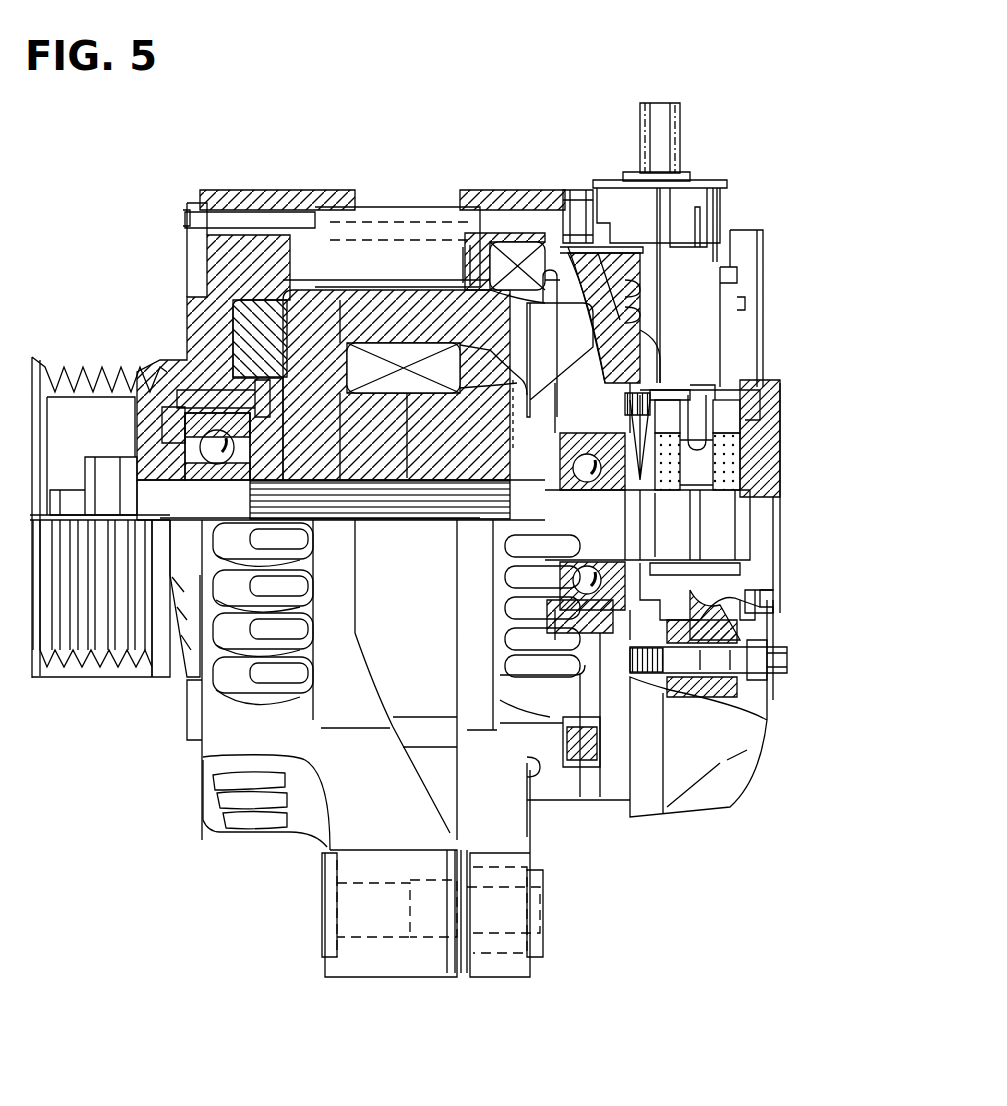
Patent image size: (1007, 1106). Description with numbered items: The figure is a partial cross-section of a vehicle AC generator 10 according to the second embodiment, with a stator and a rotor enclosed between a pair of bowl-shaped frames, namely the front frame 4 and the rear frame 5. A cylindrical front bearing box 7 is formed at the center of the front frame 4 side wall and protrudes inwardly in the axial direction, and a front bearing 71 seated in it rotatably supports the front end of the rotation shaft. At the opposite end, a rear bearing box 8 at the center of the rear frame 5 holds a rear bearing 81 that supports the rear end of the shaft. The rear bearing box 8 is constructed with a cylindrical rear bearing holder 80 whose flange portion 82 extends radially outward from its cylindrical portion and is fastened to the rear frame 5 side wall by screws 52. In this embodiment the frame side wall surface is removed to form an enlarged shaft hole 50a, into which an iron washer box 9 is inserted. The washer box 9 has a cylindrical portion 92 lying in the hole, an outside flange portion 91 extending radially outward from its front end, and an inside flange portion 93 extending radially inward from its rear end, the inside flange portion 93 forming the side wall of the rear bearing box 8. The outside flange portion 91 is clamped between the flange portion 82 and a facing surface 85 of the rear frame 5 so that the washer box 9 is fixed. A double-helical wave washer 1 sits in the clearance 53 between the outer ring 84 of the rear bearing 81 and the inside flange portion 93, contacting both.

The AC generator 10 is at (491, 159).
The double-helical wave washer 1 is at (657, 553).
The front frame 4 is at (208, 770).
The rear frame 5 is at (550, 703).
The front bearing box 7 is at (232, 363).
The front bearing 71 is at (220, 437).
The rear bearing box 8 is at (593, 620).
The washer box 9 is at (630, 430).
The outside flange portion 91 is at (703, 400).
The cylindrical portion 92 is at (777, 403).
The inside flange portion 93 is at (640, 477).
The enlarged shaft hole 50a is at (673, 613).
The screws 52 is at (643, 355).
The clearance 53 is at (717, 477).
The rear bearing holder 80 is at (603, 370).
The rear bearing 81 is at (648, 585).
The flange portion 82 is at (643, 383).
The outer ring 84 is at (663, 393).
The facing surface 85 is at (707, 620).